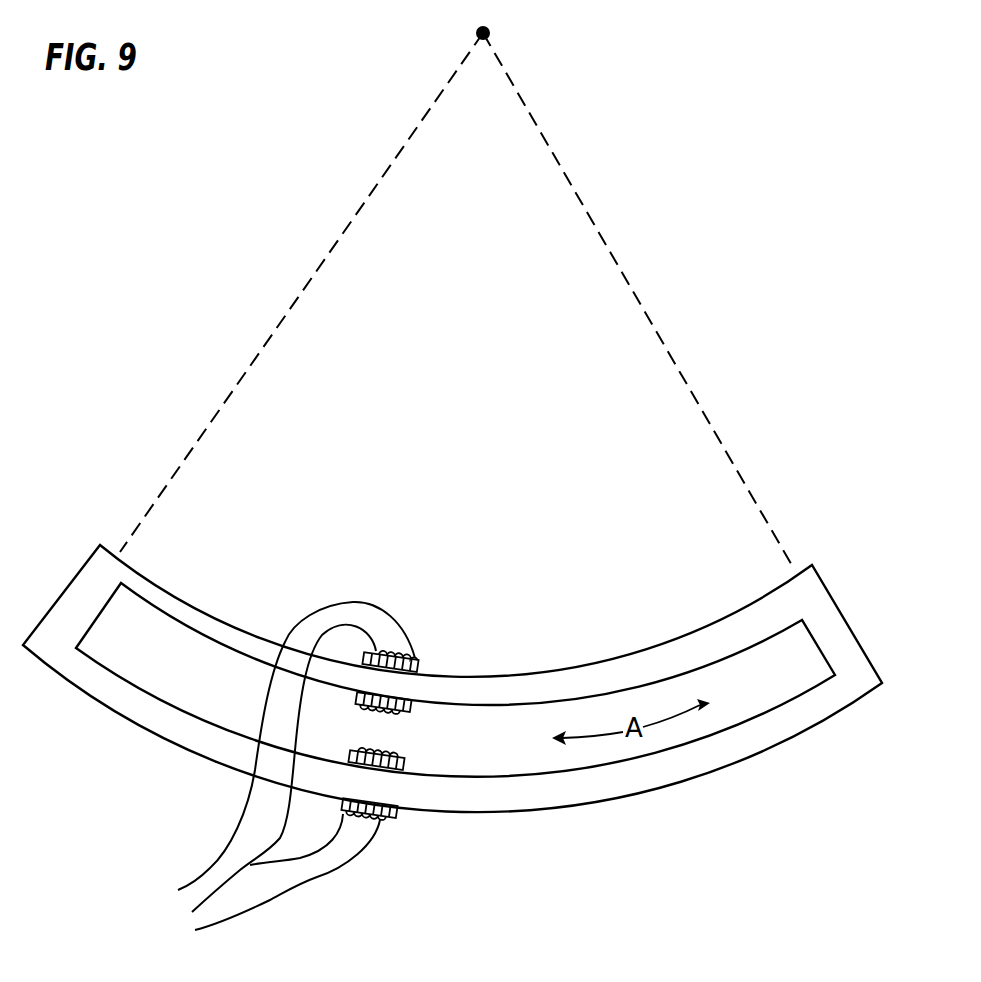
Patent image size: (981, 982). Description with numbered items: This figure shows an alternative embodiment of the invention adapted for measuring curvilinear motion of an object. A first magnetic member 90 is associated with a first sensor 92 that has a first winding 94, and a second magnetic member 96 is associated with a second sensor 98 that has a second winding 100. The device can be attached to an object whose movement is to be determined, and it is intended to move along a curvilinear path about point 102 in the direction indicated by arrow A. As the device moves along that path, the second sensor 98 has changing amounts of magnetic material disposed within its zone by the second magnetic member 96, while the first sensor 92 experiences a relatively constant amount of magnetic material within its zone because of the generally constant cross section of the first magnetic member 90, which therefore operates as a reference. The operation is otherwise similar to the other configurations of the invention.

The first magnetic member 90 is at (561, 796).
The first sensor 92 is at (403, 762).
The first winding 94 is at (377, 833).
The second magnetic member 96 is at (574, 677).
The second sensor 98 is at (423, 664).
The second winding 100 is at (394, 610).
The point 102 is at (489, 28).